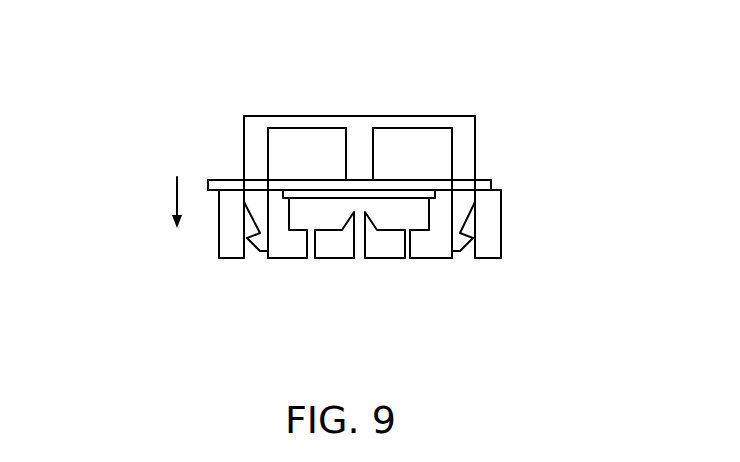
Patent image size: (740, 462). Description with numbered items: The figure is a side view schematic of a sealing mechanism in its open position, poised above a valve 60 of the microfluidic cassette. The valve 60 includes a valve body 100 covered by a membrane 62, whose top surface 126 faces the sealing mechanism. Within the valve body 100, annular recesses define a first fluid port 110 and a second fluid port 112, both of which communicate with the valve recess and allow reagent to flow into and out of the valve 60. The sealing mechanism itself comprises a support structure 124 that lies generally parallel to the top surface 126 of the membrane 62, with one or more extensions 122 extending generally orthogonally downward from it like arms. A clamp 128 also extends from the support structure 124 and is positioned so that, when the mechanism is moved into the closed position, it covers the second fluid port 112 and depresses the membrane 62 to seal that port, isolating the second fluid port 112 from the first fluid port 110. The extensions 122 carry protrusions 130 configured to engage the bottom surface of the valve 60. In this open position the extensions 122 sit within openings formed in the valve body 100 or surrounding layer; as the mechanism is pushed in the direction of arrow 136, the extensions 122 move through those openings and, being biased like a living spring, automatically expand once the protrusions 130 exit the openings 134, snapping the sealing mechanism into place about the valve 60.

The valve 60 is at (200, 162).
The membrane 62 is at (490, 183).
The valve body 100 is at (218, 243).
The first fluid port 110 is at (313, 253).
The second fluid port 112 is at (357, 253).
The extensions 122 is at (243, 128).
The support structure 124 is at (406, 116).
The top surface 126 is at (425, 179).
The clamp 128 is at (346, 155).
The protrusions 130 is at (463, 253).
The openings 134 is at (253, 253).
The arrow 136 is at (175, 190).